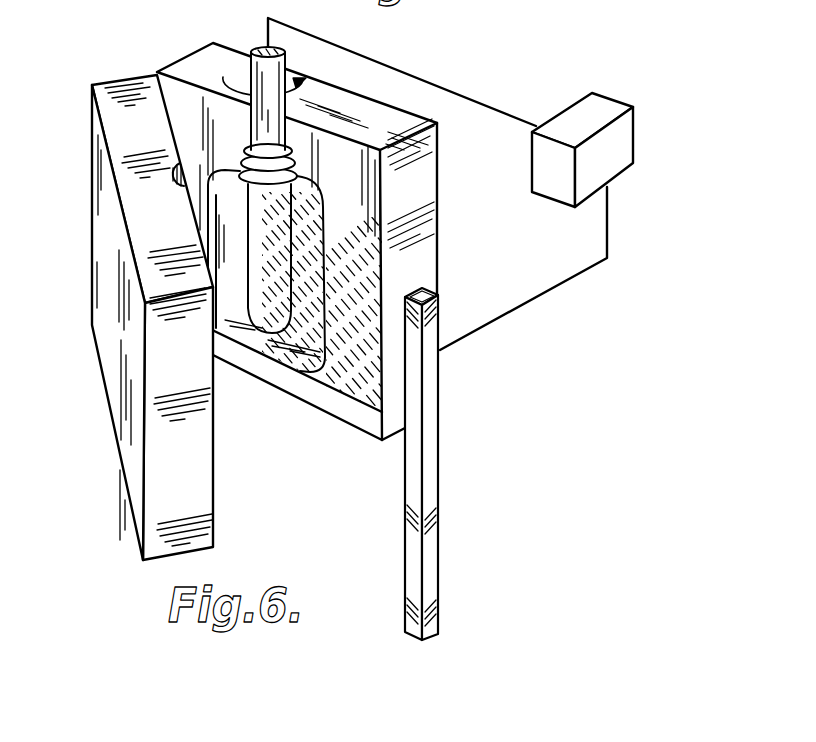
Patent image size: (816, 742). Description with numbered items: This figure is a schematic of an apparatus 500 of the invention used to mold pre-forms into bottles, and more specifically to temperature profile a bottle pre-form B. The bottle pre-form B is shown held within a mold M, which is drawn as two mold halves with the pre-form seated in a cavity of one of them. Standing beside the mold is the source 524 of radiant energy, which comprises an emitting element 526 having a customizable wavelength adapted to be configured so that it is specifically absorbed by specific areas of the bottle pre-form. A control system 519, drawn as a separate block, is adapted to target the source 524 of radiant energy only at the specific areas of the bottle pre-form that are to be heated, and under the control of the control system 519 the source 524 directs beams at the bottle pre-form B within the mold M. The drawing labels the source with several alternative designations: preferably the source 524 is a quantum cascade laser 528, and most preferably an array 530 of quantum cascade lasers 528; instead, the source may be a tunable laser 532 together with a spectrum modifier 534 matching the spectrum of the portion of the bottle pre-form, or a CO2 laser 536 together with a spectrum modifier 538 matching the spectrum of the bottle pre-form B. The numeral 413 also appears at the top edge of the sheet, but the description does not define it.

The mold M is at (203, 66).
The bottle pre-form B is at (270, 303).
The apparatus 500 is at (508, 100).
The control system 519 is at (617, 138).
The platen 413 is at (591, 7).
The source of radiant energy 524 is at (385, 637).
The emitting element 526 is at (547, 464).
The quantum cascade laser 528 is at (547, 464).
The array of quantum cascade lasers 530 is at (547, 464).
The tunable laser 532 is at (547, 464).
The spectrum modifier 534 is at (547, 464).
The CO2 laser 536 is at (547, 464).
The spectrum modifier 538 is at (547, 464).